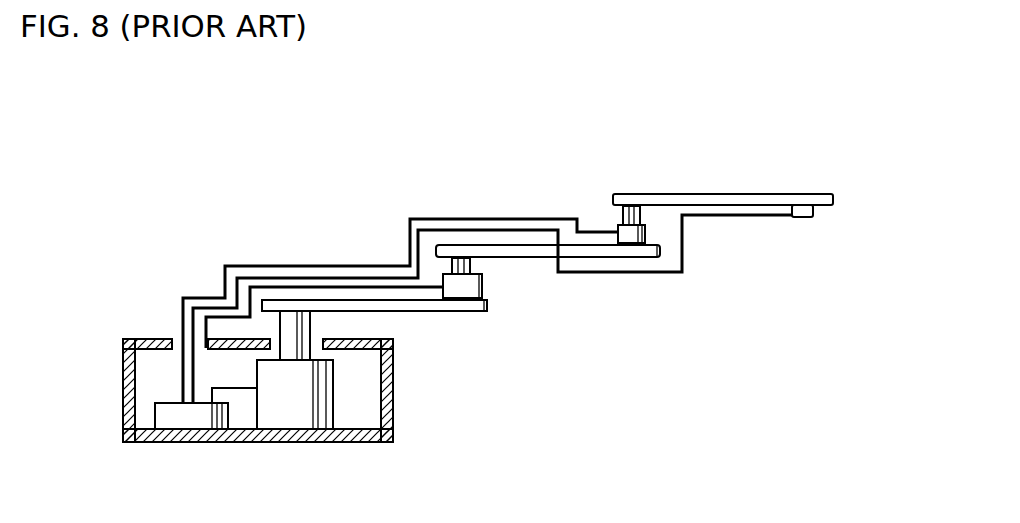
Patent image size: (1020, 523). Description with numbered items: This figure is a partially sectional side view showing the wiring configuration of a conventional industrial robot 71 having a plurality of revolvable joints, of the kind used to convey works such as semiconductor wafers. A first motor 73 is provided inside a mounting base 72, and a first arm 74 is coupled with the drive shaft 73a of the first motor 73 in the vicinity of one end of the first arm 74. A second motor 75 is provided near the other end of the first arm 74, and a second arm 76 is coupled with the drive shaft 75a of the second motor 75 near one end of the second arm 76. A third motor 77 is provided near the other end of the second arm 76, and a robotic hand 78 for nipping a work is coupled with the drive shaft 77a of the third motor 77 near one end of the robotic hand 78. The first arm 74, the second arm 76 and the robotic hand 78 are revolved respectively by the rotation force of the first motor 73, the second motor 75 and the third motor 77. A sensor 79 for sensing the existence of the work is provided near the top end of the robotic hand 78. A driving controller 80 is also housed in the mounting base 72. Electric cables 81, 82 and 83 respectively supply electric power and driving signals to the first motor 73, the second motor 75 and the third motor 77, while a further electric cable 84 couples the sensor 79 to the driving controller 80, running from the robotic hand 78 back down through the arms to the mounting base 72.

The industrial robot 71 is at (369, 101).
The mounting base 72 is at (129, 338).
The first motor 73 is at (289, 405).
The drive shaft of the first motor 73a is at (297, 345).
The first arm 74 is at (418, 312).
The second motor 75 is at (478, 299).
The drive shaft of the second motor 75a is at (473, 267).
The second arm 76 is at (607, 250).
The third motor 77 is at (633, 232).
The drive shaft of the third motor 77a is at (640, 213).
The robotic hand 78 is at (746, 193).
The sensor 79 is at (803, 218).
The driving controller 80 is at (193, 418).
The electric cable 81 is at (240, 392).
The electric cable 82 is at (260, 285).
The electric cable 83 is at (182, 299).
The electric cable 84 is at (217, 305).